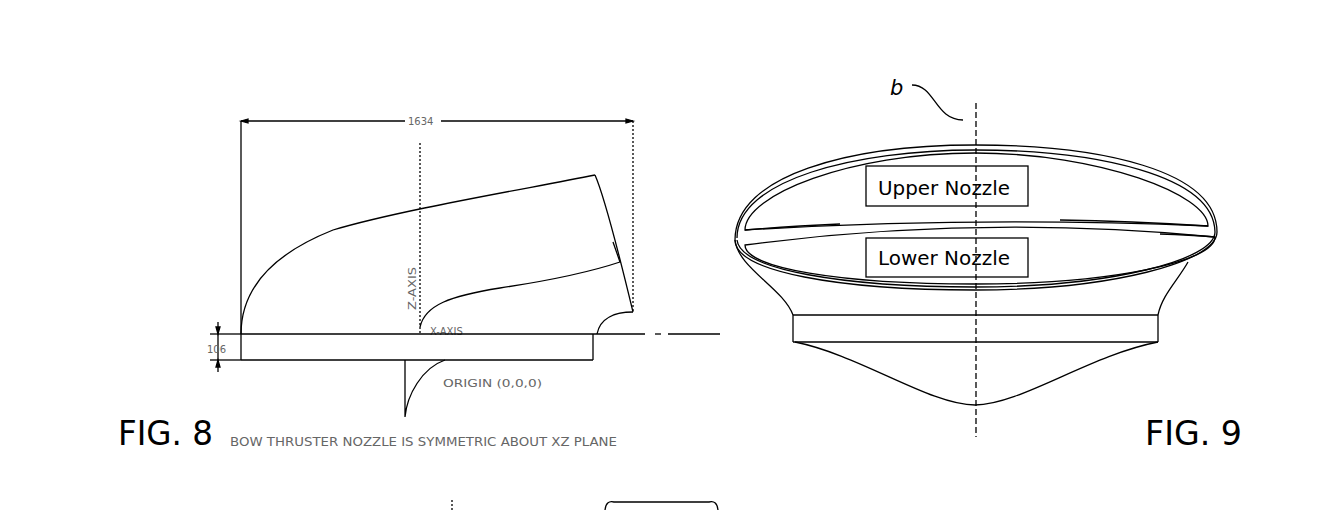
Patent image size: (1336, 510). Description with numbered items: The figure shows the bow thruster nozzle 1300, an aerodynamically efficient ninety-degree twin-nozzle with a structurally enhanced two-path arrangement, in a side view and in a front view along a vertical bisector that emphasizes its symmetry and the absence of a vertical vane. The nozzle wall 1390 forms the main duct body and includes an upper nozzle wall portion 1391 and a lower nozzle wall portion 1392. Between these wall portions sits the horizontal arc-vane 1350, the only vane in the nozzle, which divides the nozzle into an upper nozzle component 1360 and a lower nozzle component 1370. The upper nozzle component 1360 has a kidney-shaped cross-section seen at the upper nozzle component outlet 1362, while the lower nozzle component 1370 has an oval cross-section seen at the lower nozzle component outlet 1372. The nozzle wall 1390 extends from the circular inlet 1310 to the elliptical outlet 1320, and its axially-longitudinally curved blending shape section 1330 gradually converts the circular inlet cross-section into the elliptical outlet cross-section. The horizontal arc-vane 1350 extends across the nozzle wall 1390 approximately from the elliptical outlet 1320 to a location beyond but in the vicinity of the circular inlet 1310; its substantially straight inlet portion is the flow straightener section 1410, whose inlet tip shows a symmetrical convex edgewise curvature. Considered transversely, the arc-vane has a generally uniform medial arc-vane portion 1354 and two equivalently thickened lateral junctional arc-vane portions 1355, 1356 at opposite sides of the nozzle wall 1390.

In FIG. 8, the nozzle 1300 is at (229, 216).
In FIG. 9, the nozzle 1300 is at (1113, 126).
In FIG. 8, the circular inlet 1310 is at (355, 336).
In FIG. 9, the circular inlet 1310 is at (1115, 325).
In FIG. 8, the elliptical outlet 1320 is at (605, 198).
In FIG. 9, the elliptical outlet 1320 is at (964, 191).
In FIG. 8, the blending shape section 1330 is at (418, 254).
In FIG. 9, the blending shape section 1330 is at (798, 293).
In FIG. 8, the horizontal arc-vane 1350 is at (494, 509).
In FIG. 9, the horizontal arc-vane 1350 is at (842, 222).
In FIG. 9, the medial arc-vane portion 1354 is at (1110, 165).
In FIG. 9, the lateral junctional arc-vane portion 1355 is at (743, 236).
In FIG. 8, the lateral junctional arc-vane portion 1356 is at (450, 478).
In FIG. 9, the lateral junctional arc-vane portion 1356 is at (1217, 231).
In FIG. 9, the upper nozzle component 1360 is at (1165, 216).
In FIG. 9, the upper nozzle component outlet 1362 is at (976, 191).
In FIG. 9, the lower nozzle component 1370 is at (1165, 262).
In FIG. 9, the lower nozzle component outlet 1372 is at (980, 255).
In FIG. 8, the nozzle wall 1390 is at (407, 228).
In FIG. 9, the nozzle wall 1390 is at (964, 191).
In FIG. 9, the upper nozzle wall portion 1391 is at (1030, 150).
In FIG. 9, the lower nozzle wall portion 1392 is at (1172, 282).
In FIG. 8, the flow straightener section 1410 is at (420, 390).
In FIG. 9, the flow straightener section 1410 is at (877, 410).